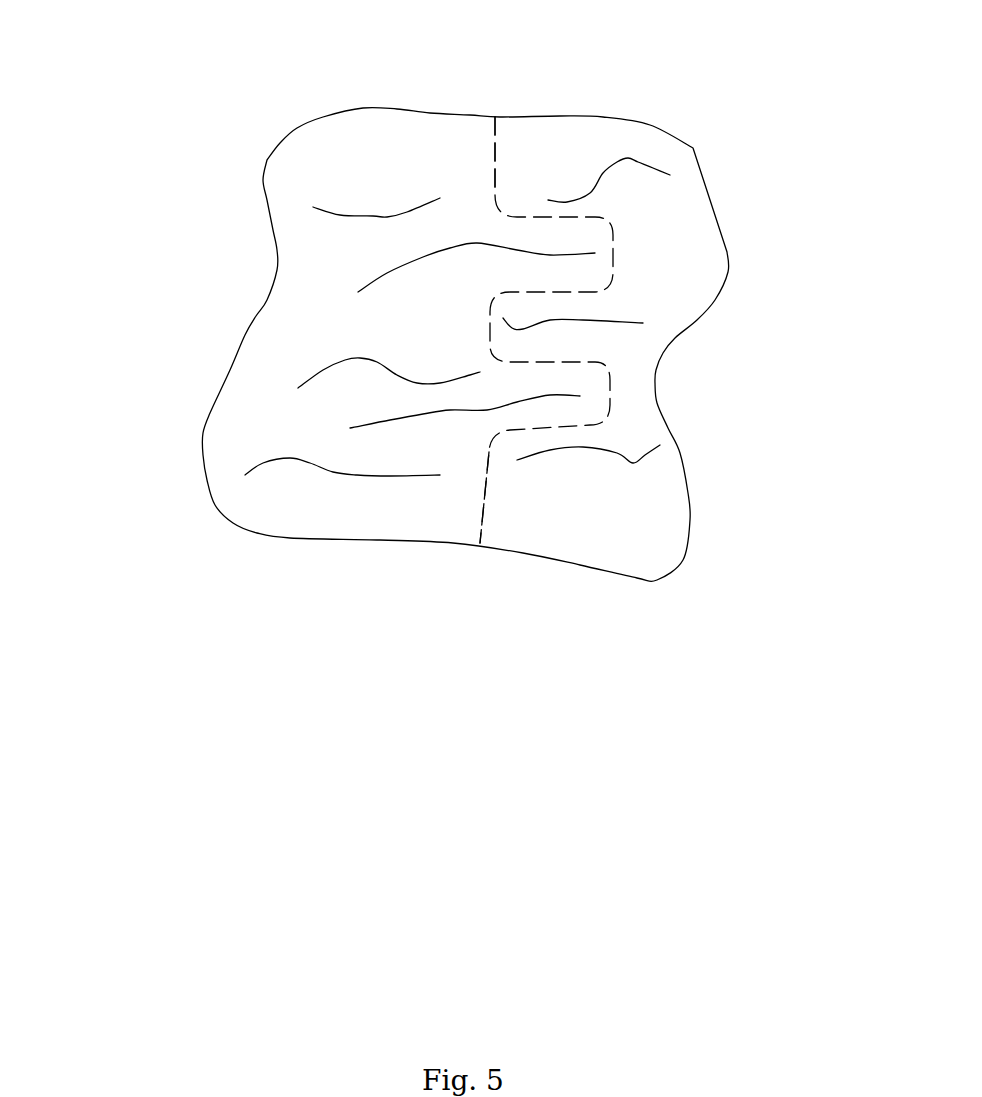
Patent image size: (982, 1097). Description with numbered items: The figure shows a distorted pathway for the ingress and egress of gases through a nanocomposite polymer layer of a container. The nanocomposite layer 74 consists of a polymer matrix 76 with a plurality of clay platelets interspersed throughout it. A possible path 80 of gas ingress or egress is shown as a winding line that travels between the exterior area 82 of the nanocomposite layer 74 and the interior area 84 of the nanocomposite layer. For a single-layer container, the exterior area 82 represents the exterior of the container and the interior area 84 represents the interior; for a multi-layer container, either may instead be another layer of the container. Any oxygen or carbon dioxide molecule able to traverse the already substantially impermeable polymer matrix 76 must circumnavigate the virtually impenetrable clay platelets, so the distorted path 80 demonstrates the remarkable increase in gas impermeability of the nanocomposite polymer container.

The nanocomposite layer 74 is at (206, 586).
The polymer matrix 76 is at (603, 117).
The path of ingress or egress of gases 80 is at (482, 510).
The exterior area 82 is at (493, 98).
The interior area 84 is at (481, 542).